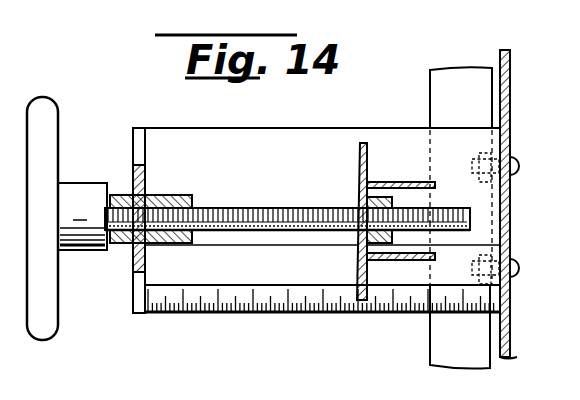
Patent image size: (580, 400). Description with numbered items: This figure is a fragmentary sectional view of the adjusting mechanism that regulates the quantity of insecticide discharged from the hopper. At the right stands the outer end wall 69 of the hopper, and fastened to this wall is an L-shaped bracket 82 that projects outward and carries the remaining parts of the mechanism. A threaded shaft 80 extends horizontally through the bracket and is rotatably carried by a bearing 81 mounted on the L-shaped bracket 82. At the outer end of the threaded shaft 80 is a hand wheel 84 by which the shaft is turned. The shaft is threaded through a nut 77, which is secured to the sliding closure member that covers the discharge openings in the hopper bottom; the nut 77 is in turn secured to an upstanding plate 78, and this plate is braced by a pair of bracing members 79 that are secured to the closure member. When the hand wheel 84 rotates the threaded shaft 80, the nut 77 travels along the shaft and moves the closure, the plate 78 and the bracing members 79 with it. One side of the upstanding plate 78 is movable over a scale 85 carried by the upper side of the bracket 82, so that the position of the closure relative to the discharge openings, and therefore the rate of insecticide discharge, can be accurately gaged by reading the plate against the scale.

The outer end wall 69 is at (502, 52).
The nut 77 is at (392, 204).
The upstanding plate 78 is at (368, 167).
The bracing members 79 is at (412, 182).
The threaded shaft 80 is at (270, 207).
The bearing 81 is at (150, 195).
The L-shaped bracket 82 is at (268, 131).
The hand wheel 84 is at (58, 303).
The scale 85 is at (300, 314).